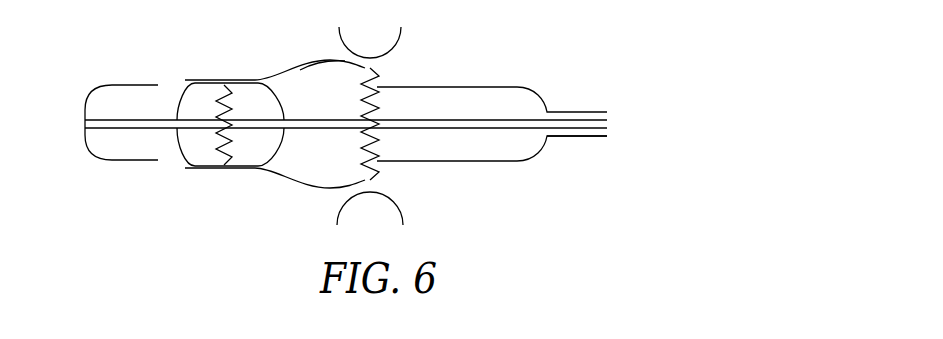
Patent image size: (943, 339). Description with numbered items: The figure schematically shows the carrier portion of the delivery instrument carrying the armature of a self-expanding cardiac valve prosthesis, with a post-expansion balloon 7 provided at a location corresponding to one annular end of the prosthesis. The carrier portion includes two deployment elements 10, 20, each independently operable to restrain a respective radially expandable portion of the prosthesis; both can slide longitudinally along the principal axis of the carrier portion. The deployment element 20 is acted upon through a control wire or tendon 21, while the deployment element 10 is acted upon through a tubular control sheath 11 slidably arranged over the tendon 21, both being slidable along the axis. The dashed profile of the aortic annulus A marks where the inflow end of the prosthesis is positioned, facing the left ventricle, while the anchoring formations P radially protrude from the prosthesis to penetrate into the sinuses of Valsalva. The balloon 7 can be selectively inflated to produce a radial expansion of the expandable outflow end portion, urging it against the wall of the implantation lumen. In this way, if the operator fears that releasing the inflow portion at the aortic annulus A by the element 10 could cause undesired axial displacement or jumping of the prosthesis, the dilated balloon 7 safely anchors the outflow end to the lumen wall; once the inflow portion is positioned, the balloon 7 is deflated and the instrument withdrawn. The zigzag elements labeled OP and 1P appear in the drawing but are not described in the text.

The deployment element 20 is at (85, 110).
The balloon 7 is at (187, 141).
The outer pressure spring OP is at (224, 168).
The control wire or tendon 21 is at (325, 118).
The aortic annulus A is at (340, 33).
The inner pressure spring 1P is at (361, 149).
The anchoring formations P is at (322, 188).
The deployment element 10 is at (511, 87).
The tubular control sheath 11 is at (580, 137).